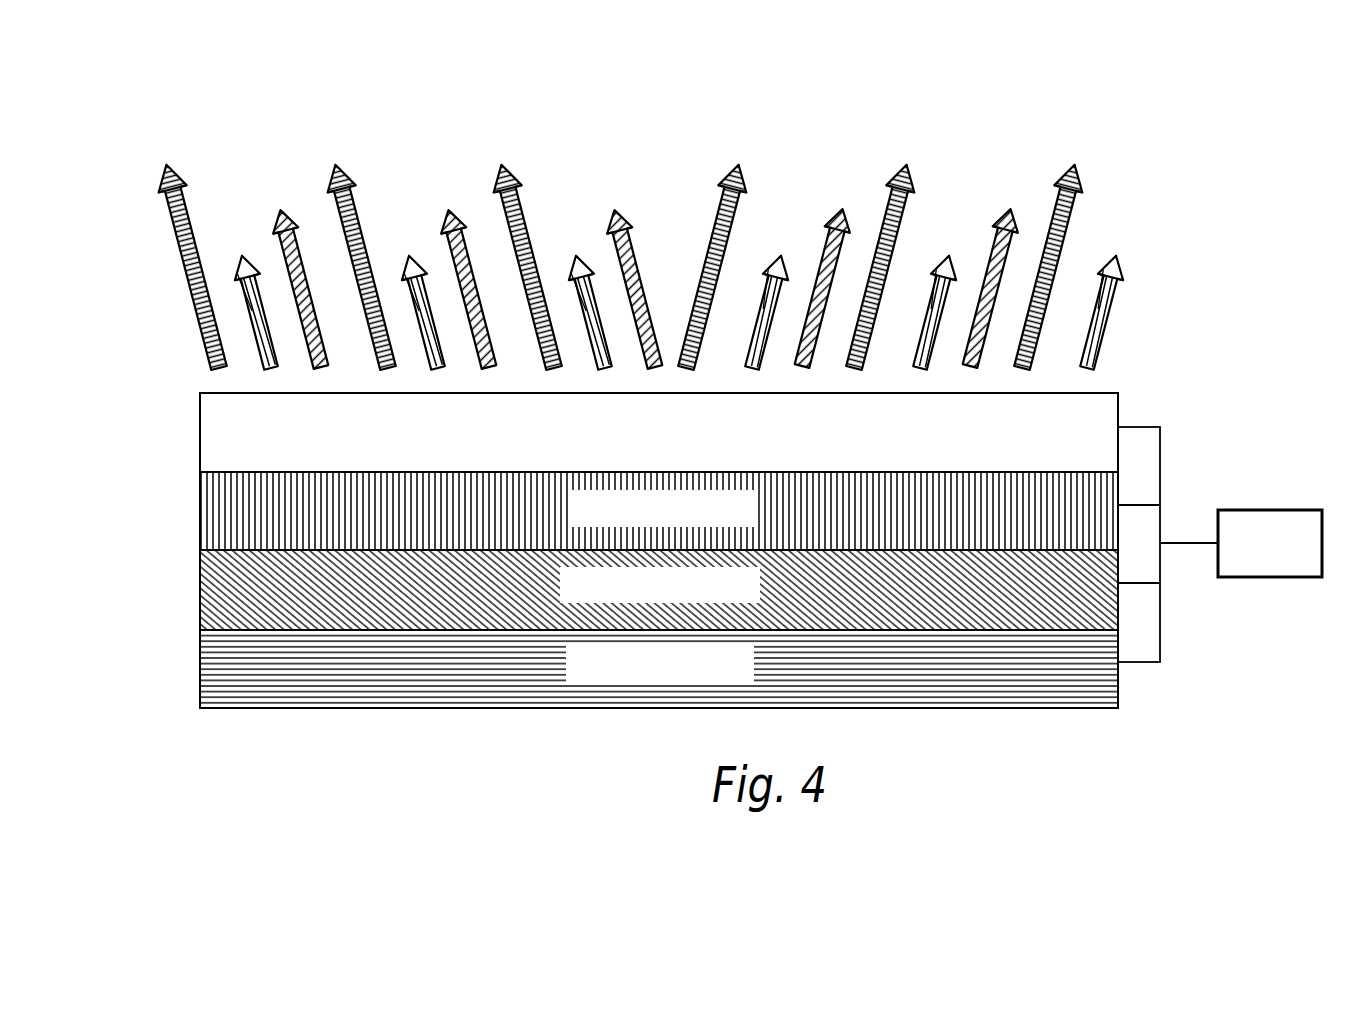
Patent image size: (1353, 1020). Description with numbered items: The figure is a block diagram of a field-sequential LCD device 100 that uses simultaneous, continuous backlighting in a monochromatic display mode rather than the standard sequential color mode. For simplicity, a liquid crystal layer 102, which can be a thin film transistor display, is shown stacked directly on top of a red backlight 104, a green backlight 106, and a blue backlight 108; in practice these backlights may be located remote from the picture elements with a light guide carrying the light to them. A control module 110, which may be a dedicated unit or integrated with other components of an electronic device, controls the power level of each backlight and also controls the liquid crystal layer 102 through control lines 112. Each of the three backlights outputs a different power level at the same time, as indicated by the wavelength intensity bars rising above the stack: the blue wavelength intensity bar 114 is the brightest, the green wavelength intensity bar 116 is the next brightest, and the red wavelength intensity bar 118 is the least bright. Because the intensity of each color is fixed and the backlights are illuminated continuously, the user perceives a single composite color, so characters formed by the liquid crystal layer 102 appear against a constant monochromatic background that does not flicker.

The FS LCD device 100 is at (1245, 260).
The liquid crystal layer 102 is at (218, 432).
The red backlight 104 is at (218, 511).
The green backlight 106 is at (218, 590).
The blue backlight 108 is at (218, 670).
The control module 110 is at (1278, 510).
The control lines 112 is at (1160, 612).
The blue wavelength intensity bar 114 is at (197, 241).
The green wavelength intensity bar 116 is at (266, 310).
The red wavelength intensity bar 118 is at (308, 283).